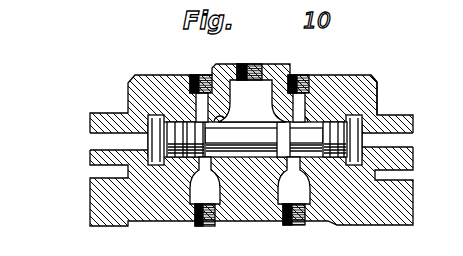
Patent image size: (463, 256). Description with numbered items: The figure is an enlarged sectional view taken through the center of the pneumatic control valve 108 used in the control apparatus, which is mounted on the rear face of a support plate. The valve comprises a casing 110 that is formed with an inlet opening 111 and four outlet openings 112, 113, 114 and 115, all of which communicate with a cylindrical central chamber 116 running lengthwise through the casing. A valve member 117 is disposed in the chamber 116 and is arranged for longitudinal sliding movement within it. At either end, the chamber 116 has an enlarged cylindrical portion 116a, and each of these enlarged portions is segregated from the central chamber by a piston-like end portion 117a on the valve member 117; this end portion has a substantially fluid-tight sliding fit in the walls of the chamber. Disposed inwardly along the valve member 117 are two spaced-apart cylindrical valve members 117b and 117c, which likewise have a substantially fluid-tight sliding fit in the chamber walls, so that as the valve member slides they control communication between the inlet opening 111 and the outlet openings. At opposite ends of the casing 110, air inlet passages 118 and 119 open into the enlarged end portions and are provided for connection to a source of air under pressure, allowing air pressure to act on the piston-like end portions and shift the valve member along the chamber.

The control valve 108 is at (196, 74).
The casing 110 is at (345, 75).
The inlet opening 111 is at (250, 64).
The outlet opening 112 is at (207, 227).
The outlet opening 113 is at (294, 226).
The outlet opening 114 is at (194, 74).
The outlet opening 115 is at (292, 75).
The central chamber 116 is at (218, 122).
The enlarged cylindrical portion 116a is at (126, 112).
The valve member 117 is at (294, 180).
The piston-like end portion 117a is at (207, 180).
The cylindrical valve member 117b is at (264, 139).
The cylindrical valve member 117c is at (299, 139).
The air inlet passage 118 is at (102, 140).
The air inlet passage 119 is at (397, 144).